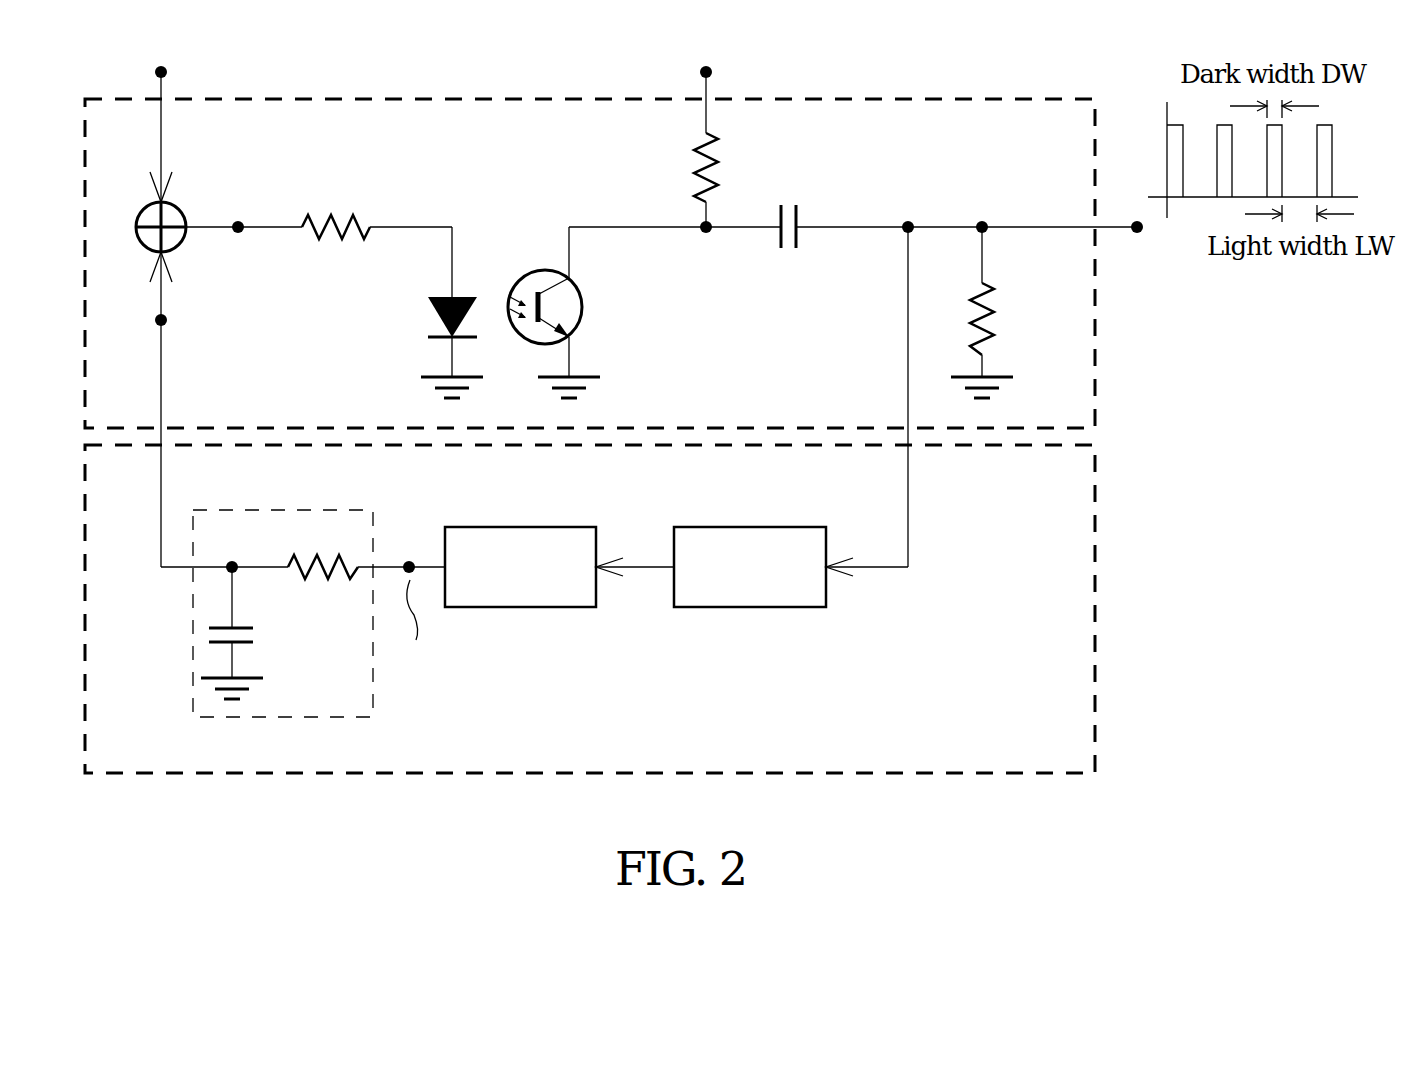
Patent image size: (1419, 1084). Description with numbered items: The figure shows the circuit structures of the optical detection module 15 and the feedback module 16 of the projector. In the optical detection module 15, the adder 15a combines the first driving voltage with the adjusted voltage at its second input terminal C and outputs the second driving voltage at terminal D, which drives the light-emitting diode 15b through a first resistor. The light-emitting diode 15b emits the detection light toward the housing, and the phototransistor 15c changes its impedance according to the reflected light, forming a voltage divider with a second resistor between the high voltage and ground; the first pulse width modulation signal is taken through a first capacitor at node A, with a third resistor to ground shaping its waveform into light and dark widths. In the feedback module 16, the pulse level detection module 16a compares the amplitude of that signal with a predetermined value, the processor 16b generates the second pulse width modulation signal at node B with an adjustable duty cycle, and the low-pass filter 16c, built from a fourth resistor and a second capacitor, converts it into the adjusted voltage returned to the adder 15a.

The optical detection module 15 is at (85, 172).
The adder 15a is at (143, 210).
The light-emitting diode 15b is at (430, 318).
The phototransistor 15c is at (583, 310).
The feedback module 16 is at (85, 522).
The pulse level detection module 16a is at (768, 527).
The processor 16b is at (545, 527).
The low-pass filter 16c is at (335, 510).